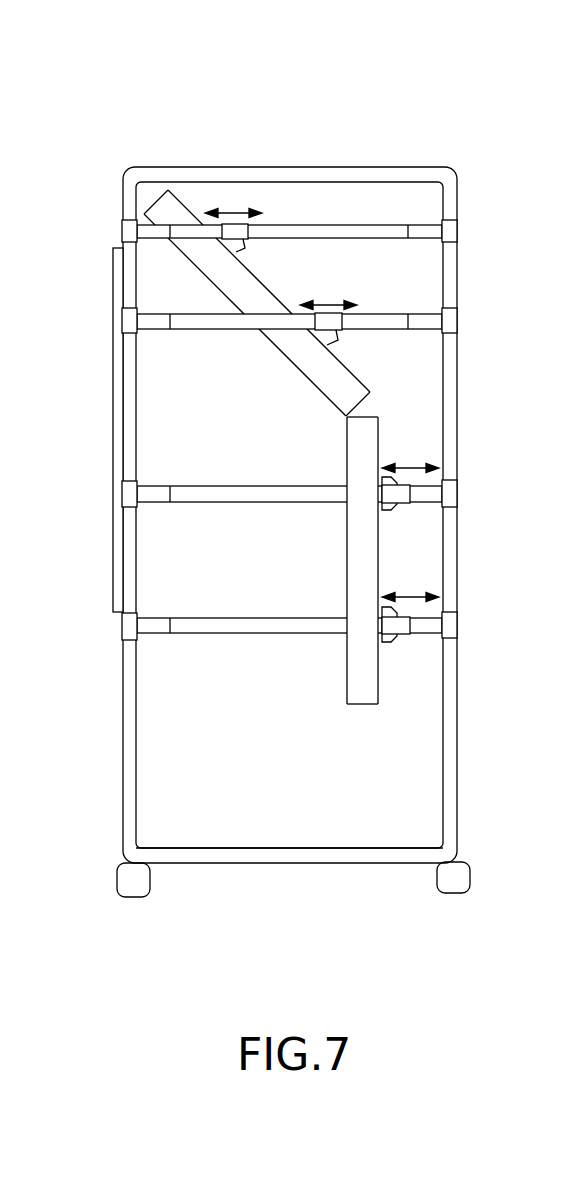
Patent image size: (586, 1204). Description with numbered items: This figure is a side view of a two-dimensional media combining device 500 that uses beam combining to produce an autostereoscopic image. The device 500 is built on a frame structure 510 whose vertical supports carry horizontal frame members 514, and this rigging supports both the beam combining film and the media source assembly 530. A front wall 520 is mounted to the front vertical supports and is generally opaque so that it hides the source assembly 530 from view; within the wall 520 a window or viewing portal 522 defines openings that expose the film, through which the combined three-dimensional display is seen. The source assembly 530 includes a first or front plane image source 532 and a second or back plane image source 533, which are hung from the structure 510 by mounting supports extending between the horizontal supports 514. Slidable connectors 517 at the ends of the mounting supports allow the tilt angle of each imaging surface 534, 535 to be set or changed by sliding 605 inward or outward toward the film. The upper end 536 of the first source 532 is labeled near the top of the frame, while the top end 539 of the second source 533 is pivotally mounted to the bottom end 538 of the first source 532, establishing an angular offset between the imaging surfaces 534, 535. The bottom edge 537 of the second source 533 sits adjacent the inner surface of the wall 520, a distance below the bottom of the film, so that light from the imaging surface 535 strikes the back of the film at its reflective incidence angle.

The 2D media combining device 500 is at (437, 97).
The frame structure 510 is at (253, 881).
The horizontal frame members 514 is at (188, 618).
The connectors 517 is at (403, 630).
The front wall 520 is at (122, 170).
The window or viewing portal 522 is at (113, 613).
The 2D media source assembly 530 is at (346, 732).
The first or front plane 2D image source 532 is at (259, 356).
The second or back plane 2D image source 533 is at (325, 653).
The imaging surface 534 is at (307, 377).
The imaging surface 535 is at (347, 551).
The upper end of diagonal member 536 is at (180, 200).
The second or bottom edge/end 537 is at (378, 693).
The second or bottom end/edge 538 is at (360, 383).
The first or top end/edge 539 is at (378, 425).
The sliding 605 is at (240, 212).